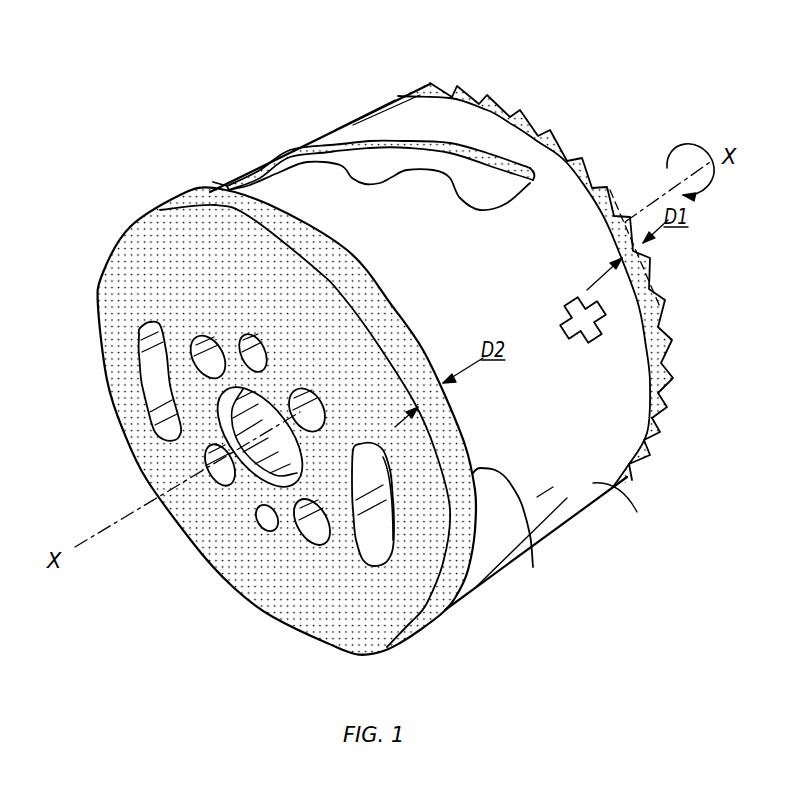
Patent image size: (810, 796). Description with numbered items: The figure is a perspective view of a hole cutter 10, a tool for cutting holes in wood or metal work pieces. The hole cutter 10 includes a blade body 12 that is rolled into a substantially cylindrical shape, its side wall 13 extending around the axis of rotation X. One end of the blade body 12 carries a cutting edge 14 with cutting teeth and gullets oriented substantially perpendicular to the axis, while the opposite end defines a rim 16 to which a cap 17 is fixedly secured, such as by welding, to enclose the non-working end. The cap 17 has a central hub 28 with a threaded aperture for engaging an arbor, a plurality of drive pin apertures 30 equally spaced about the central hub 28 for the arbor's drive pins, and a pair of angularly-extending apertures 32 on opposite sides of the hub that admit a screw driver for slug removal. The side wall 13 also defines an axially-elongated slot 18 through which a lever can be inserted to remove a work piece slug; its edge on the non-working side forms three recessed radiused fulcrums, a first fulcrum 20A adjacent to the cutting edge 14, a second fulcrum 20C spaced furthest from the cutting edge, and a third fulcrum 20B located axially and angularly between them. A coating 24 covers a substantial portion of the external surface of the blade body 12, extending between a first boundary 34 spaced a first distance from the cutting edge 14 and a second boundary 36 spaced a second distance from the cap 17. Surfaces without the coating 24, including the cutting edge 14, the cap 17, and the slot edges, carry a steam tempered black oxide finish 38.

The hole cutter 10 is at (397, 353).
The blade body 12 is at (556, 474).
The side wall 13 is at (621, 512).
The cutting edge 14 is at (540, 132).
The rim 16 is at (533, 560).
The cap 17 is at (261, 434).
The slot 18 is at (296, 138).
The first fulcrum 20A is at (213, 182).
The third fulcrum 20B is at (370, 186).
The second fulcrum 20C is at (470, 211).
The coating 24 is at (510, 308).
The central hub 28 is at (195, 546).
The drive pin apertures 30 is at (197, 338).
The angularly-extending apertures 32 is at (152, 375).
The first boundary 34 is at (593, 207).
The second boundary 36 is at (393, 305).
The black oxide finish 38 is at (180, 265).